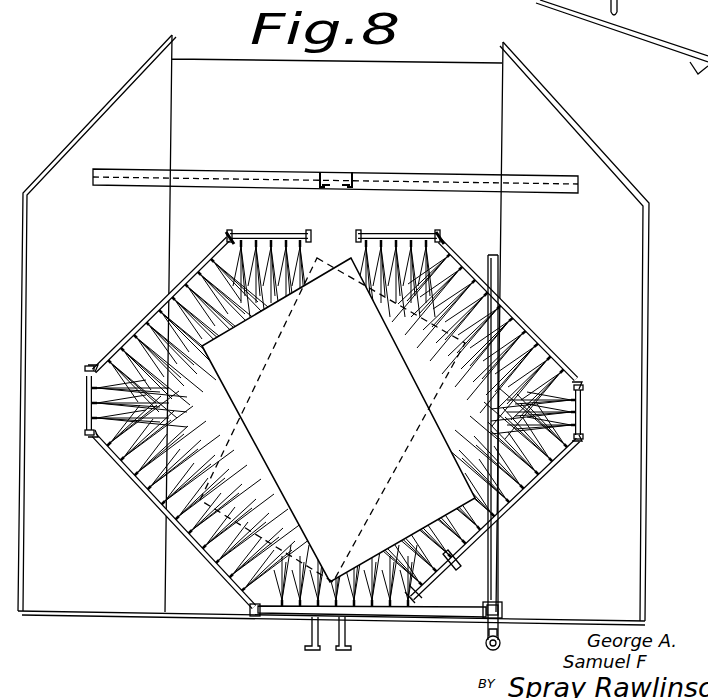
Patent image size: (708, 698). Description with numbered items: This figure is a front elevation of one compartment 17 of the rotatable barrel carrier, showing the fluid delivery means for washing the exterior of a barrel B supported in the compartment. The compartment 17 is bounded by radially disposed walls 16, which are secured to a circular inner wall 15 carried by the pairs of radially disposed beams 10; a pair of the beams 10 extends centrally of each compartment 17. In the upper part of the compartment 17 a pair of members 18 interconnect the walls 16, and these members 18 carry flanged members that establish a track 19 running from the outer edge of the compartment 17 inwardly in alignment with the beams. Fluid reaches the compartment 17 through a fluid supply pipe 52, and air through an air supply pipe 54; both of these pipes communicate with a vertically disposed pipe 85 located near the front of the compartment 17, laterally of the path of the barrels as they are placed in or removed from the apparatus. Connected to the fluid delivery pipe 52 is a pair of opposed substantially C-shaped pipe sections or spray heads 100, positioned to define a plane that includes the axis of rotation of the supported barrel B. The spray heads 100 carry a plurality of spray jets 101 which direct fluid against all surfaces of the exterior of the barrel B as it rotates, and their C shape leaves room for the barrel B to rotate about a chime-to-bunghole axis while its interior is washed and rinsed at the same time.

The radially disposed beams 10 is at (340, 640).
The circular inner wall 15 is at (430, 76).
The radially disposed walls 16 is at (92, 133).
The compartment 17 is at (336, 104).
The members 18 is at (262, 178).
The track 19 is at (350, 172).
The fluid supply pipe 52 is at (500, 608).
The air supply pipe 54 is at (484, 643).
The vertically disposed pipe 85 is at (499, 282).
The C-shaped pipe sections or spray heads 100 is at (152, 312).
The spray jets 101 is at (288, 240).
The body being sprayed B is at (337, 420).